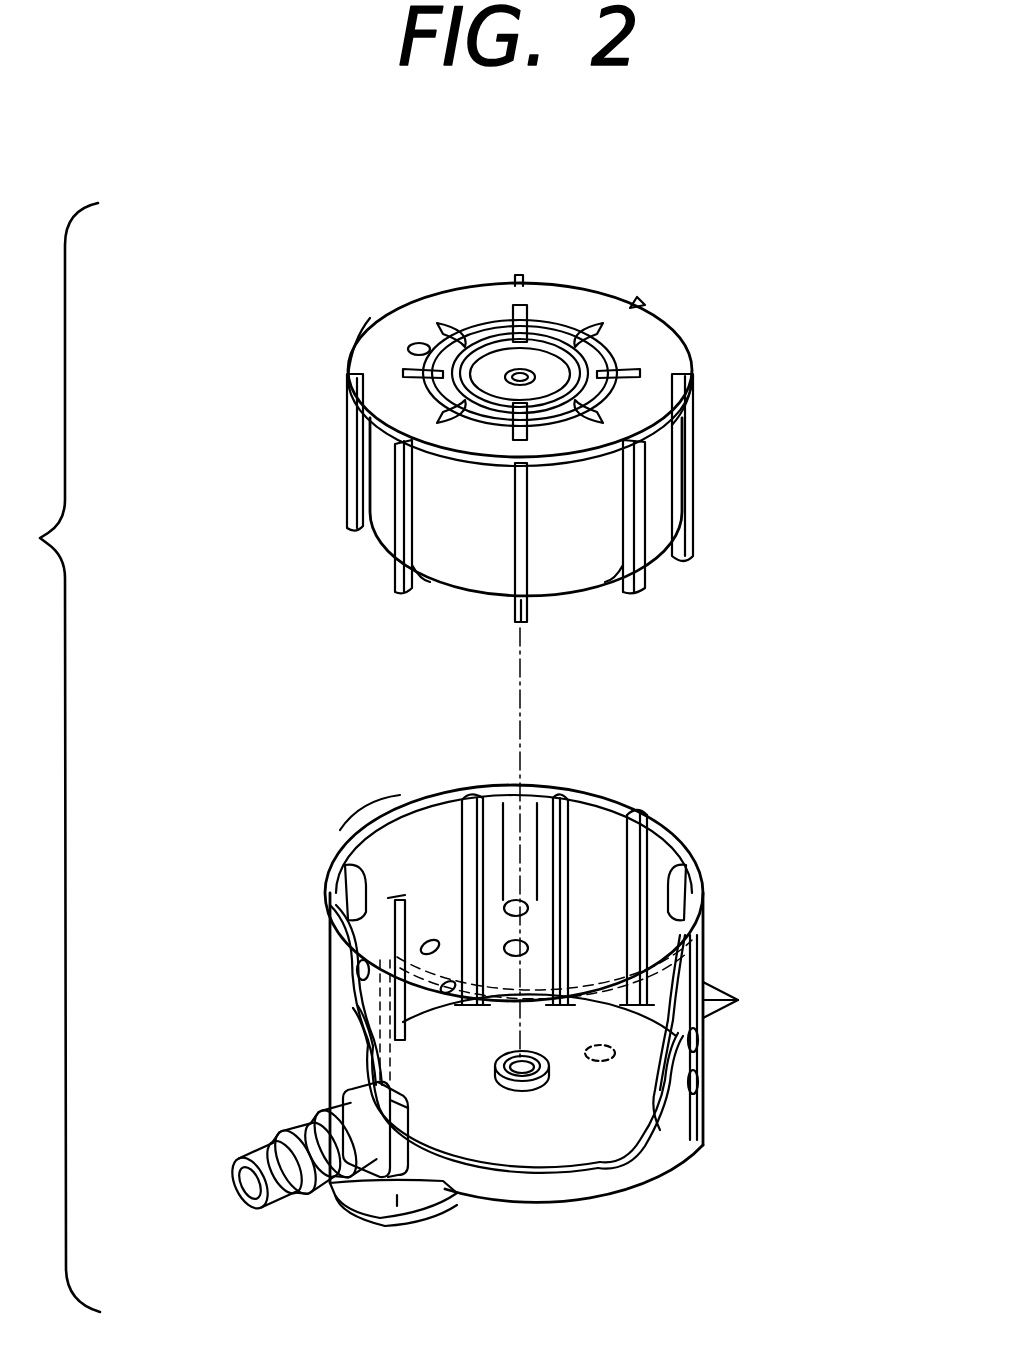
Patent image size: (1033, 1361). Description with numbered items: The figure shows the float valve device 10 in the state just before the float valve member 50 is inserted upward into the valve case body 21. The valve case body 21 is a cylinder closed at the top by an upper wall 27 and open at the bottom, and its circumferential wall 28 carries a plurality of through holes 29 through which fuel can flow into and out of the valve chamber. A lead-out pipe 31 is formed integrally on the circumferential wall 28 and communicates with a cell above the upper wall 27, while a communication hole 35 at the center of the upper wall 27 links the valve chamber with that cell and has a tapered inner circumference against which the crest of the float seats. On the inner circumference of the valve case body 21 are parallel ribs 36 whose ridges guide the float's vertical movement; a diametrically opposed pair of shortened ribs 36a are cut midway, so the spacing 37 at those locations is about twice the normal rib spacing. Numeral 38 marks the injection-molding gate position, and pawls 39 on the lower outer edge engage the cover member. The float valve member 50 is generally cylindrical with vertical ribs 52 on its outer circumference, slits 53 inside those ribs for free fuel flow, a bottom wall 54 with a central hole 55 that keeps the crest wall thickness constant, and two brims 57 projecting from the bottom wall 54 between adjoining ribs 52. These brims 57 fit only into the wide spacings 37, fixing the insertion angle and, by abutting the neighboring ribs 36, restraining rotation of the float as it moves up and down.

The float valve device 10 is at (313, 811).
The valve case body 21 is at (293, 971).
The upper wall 27 is at (545, 1133).
The circumferential wall 28 is at (338, 1047).
The through holes 29 is at (510, 820).
The lead-out pipe 31 is at (302, 1190).
The communication hole 35 is at (505, 1085).
The ribs 36 is at (488, 835).
The shortened ribs 36a is at (333, 904).
The spacing 37 is at (455, 782).
The gate position 38 is at (600, 1062).
The pawls 39 is at (703, 921).
The float valve member 50 is at (736, 332).
The ribs 52 is at (348, 472).
The slits 53 is at (522, 312).
The bottom wall 54 is at (470, 297).
The hole 55 is at (524, 372).
The brims 57 is at (352, 345).